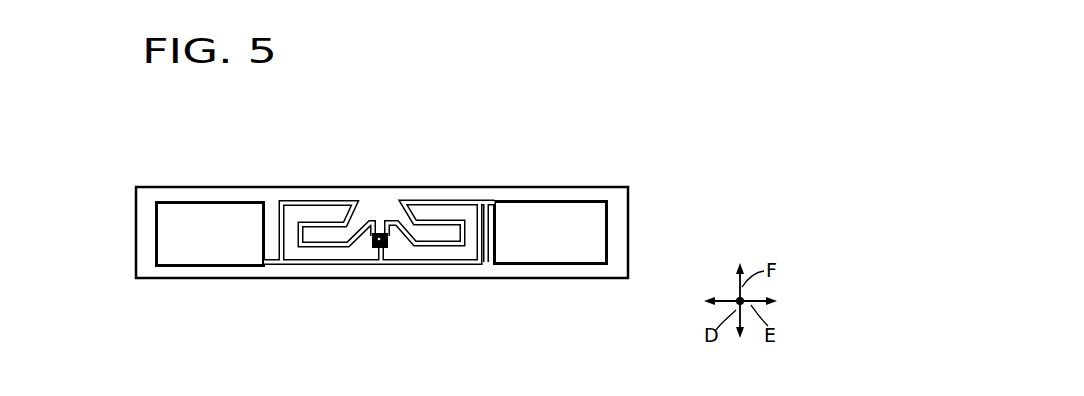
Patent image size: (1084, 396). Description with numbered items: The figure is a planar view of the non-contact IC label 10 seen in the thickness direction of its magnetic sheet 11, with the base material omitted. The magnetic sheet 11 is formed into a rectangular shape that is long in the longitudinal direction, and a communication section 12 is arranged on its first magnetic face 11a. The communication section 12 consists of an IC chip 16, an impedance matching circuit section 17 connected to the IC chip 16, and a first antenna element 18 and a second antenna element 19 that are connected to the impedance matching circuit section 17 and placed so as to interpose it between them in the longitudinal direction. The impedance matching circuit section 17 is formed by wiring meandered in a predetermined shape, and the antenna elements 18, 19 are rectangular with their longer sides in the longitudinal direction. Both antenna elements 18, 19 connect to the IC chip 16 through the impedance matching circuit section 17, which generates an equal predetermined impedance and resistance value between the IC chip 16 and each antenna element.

The non-contact IC label 10 is at (409, 229).
The magnetic sheet 11 is at (147, 181).
The first magnetic face 11a is at (143, 272).
The communication section 12 is at (622, 237).
The IC chip 16 is at (379, 233).
The impedance matching circuit section 17 is at (287, 200).
The first antenna element 18 is at (227, 237).
The second antenna element 19 is at (544, 235).